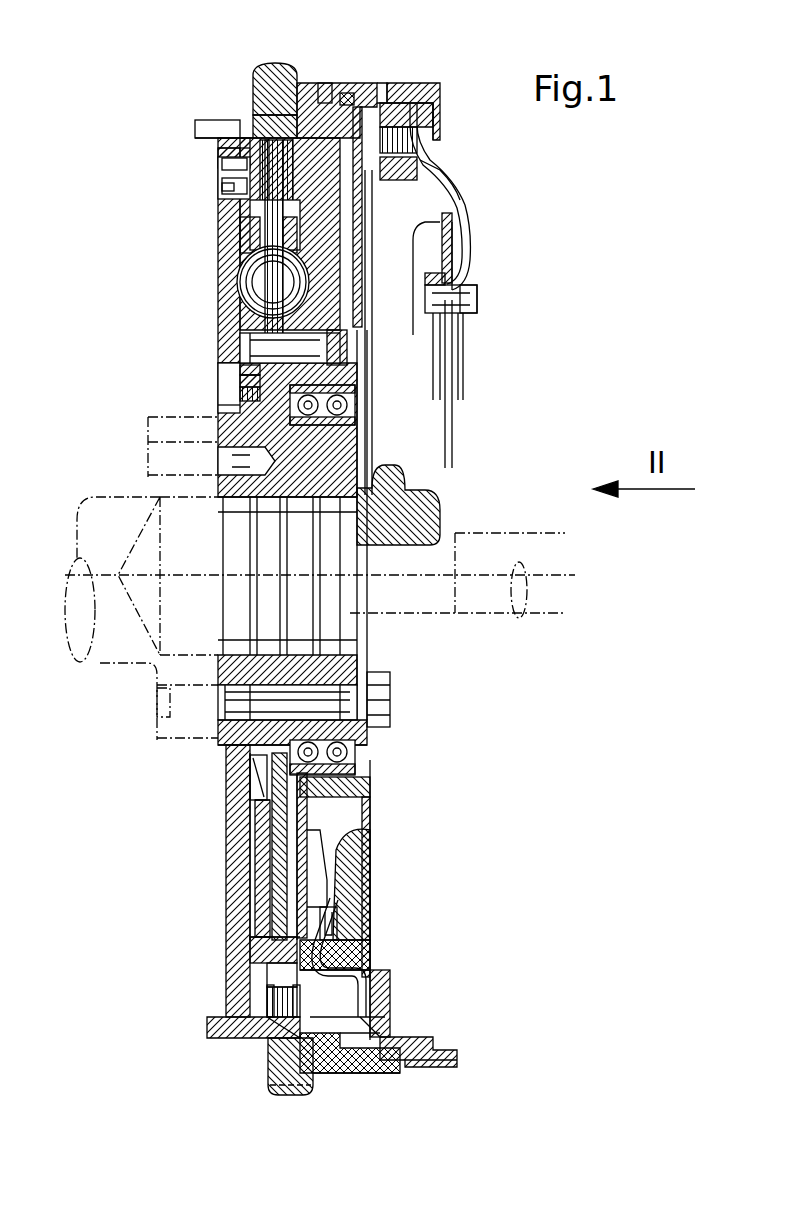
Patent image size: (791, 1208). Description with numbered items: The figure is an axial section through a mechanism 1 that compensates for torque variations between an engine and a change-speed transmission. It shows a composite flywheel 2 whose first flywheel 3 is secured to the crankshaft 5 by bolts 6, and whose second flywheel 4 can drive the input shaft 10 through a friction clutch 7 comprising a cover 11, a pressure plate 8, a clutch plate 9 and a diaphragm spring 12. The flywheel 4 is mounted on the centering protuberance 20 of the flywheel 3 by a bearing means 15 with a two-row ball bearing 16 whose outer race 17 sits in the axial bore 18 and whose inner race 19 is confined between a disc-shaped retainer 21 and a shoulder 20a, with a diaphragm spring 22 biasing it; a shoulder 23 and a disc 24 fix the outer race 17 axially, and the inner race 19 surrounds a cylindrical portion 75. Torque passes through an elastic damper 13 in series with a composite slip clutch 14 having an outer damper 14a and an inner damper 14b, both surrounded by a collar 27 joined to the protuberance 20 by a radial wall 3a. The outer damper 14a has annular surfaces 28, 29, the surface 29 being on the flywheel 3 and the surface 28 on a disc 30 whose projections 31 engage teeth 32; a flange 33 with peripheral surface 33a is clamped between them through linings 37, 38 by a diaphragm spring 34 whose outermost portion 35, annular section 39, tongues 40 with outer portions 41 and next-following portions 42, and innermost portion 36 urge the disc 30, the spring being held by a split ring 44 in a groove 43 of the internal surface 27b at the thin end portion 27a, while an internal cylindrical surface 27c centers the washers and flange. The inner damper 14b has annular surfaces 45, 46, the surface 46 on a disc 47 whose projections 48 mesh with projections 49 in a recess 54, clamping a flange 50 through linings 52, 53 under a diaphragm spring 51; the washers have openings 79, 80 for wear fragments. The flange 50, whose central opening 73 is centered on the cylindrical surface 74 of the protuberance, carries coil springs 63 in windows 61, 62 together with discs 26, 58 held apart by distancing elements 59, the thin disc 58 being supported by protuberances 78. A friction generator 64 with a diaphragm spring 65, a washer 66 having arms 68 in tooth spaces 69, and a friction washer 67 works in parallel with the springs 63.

The mechanism 1 is at (437, 81).
The composite flywheel 2 is at (322, 22).
The first flywheel 3 is at (262, 143).
The radial wall 3a is at (240, 840).
The second flywheel 4 is at (400, 120).
The crankshaft 5 is at (118, 623).
The bolts 6 is at (390, 702).
The friction clutch 7 is at (460, 203).
The pressure plate 8 is at (470, 300).
The clutch plate 9 is at (427, 513).
The input shaft 10 is at (487, 592).
The cover 11 is at (462, 247).
The diaphragm spring 12 is at (450, 440).
The elastic damper 13 is at (240, 257).
The composite slip clutch 14 is at (240, 153).
The first frictional damping device 14a is at (327, 86).
The second frictional damping device 14b is at (233, 210).
The bearing means 15 is at (280, 390).
The antifriction ball bearing 16 is at (320, 405).
The outer race 17 is at (322, 405).
The axial bore 18 is at (240, 323).
The inner race 19 is at (460, 473).
The axial centering protuberance 20 is at (213, 717).
The peripheral shoulder 20a is at (220, 410).
The disc-shaped retainer 21 is at (390, 678).
The diaphragm spring 22 is at (245, 745).
The shoulder 23 is at (367, 763).
The disc 24 is at (367, 778).
The disc 26 is at (253, 887).
The collar 27 is at (300, 87).
The end portion 27a is at (318, 84).
The internal surface 27b is at (342, 92).
The internal cylindrical surface 27c is at (303, 72).
The annular surface 28 is at (378, 975).
The annular surface 29 is at (267, 1017).
The disc 30 is at (363, 997).
The projections 31 is at (358, 1073).
The teeth 32 is at (398, 1072).
The flange 33 is at (268, 1083).
The peripheral surface 33a is at (255, 72).
The diaphragm spring 34 is at (380, 1010).
The radially outermost portion 35 is at (455, 1068).
The radially innermost portion 36 is at (365, 945).
The friction influencing lining 37 is at (320, 1070).
The friction influencing lining 38 is at (240, 1038).
The annular section 39 is at (447, 1042).
The tongues 40 is at (397, 980).
The outer portions 41 is at (418, 157).
The next-following portions 42 is at (437, 178).
The groove 43 is at (380, 83).
The split ring 44 is at (436, 105).
The annular surface 45 is at (338, 915).
The annular surface 46 is at (460, 228).
The disc 47 is at (287, 967).
The axially extending projections 48 is at (222, 163).
The projections 49 is at (222, 185).
The flange 50 is at (297, 240).
The diaphragm spring 51 is at (255, 945).
The friction influencing lining 52 is at (355, 890).
The friction influencing lining 53 is at (240, 942).
The ring-shaped recess 54 is at (230, 120).
The disc 58 is at (363, 807).
The distancing elements 59 is at (443, 360).
The window-shaped opening 61 is at (428, 275).
The window-shaped opening 62 is at (437, 262).
The coil springs 63 is at (460, 337).
The friction generator 64 is at (150, 386).
The diaphragm spring 65 is at (240, 392).
The washer 66 is at (240, 383).
The friction washer 67 is at (240, 372).
The arms 68 is at (260, 783).
The tooth spaces 69 is at (253, 795).
The central opening 73 is at (220, 405).
The cylindrical external surface 74 is at (240, 355).
The cylindrical portion 75 is at (373, 732).
The axially extending protuberances 78 is at (367, 865).
The openings 79 is at (375, 945).
The openings 80 is at (267, 988).